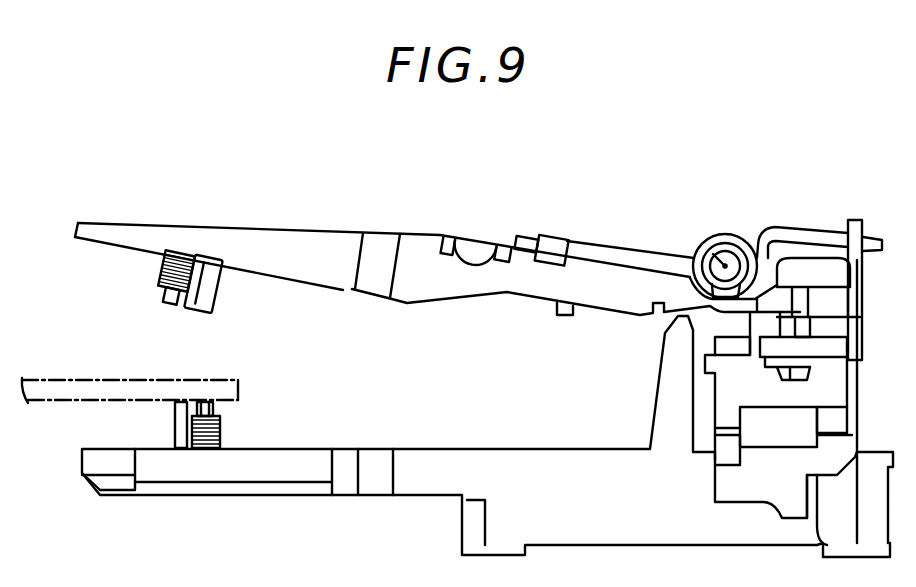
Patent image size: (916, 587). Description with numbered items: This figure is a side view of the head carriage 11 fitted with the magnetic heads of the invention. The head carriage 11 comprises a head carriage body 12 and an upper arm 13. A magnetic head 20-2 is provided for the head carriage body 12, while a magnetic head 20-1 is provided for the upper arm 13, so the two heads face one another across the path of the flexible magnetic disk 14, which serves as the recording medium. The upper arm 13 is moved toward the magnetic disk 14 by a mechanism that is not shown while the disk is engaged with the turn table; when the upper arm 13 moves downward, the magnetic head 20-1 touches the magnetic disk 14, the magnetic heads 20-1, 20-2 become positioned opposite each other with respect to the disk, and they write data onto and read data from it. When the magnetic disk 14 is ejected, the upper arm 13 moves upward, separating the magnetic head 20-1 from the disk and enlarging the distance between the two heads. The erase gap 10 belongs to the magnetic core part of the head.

The erase gap 10 is at (700, 247).
The head carriage 11 is at (546, 183).
The head carriage body 12 is at (493, 470).
The upper arm 13 is at (342, 252).
The magnetic disk 14 is at (230, 375).
The magnetic head 20-1 is at (212, 290).
The magnetic head 20-2 is at (222, 425).